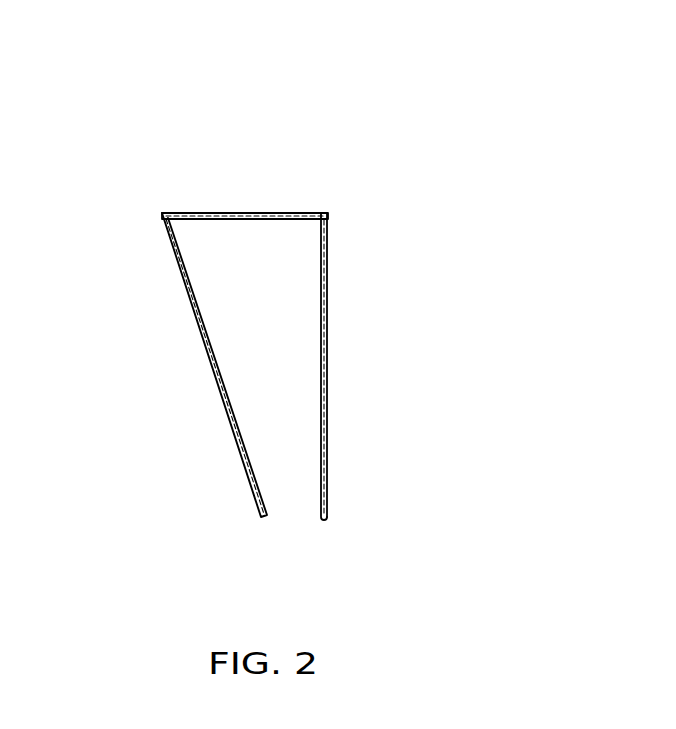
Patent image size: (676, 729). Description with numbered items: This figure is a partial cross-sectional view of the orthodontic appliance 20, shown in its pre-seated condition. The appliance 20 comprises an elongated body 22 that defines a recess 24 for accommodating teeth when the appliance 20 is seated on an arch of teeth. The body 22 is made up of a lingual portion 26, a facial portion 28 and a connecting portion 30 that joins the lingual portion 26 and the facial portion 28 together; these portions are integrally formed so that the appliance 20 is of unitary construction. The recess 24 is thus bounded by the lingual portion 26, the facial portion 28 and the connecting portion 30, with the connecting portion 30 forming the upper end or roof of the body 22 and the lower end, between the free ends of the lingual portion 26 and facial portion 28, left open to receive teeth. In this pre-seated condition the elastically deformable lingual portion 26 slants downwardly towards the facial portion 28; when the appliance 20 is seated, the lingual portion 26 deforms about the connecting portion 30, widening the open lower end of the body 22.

The appliance 20 is at (402, 175).
The elongated body 22 is at (327, 383).
The recess 24 is at (250, 338).
The lingual portion 26 is at (176, 284).
The facial portion 28 is at (336, 312).
The connecting portion 30 is at (247, 206).